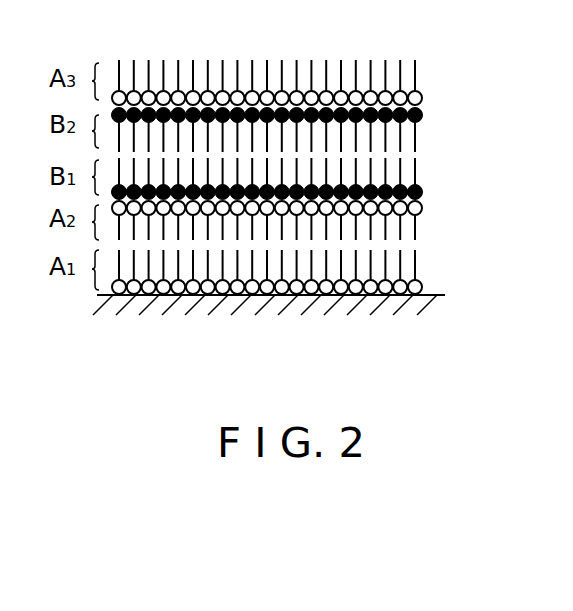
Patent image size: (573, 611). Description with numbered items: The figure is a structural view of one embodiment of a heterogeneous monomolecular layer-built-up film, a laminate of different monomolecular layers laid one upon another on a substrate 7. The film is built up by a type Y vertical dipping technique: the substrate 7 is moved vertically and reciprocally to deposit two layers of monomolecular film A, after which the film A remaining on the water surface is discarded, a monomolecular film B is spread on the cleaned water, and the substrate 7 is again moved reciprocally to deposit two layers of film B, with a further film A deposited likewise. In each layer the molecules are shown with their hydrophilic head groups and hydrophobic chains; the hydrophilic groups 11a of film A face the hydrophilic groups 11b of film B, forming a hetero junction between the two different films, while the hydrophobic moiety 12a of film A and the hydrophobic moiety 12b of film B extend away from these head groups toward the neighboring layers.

The substrate 7 is at (362, 308).
The hydrophilic groups of film A 11a is at (422, 210).
The hydrophilic groups of film B 11b is at (422, 192).
The hydrophobic moiety of film A 12a is at (416, 231).
The hydrophobic moiety of film B 12b is at (416, 174).